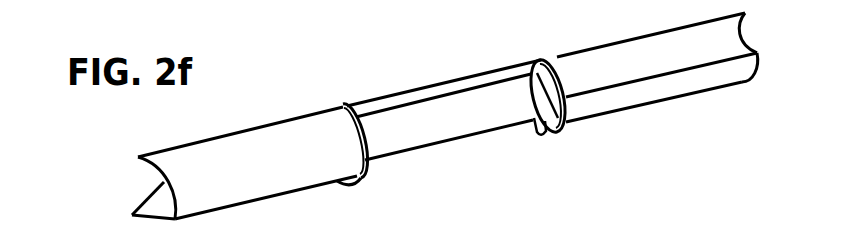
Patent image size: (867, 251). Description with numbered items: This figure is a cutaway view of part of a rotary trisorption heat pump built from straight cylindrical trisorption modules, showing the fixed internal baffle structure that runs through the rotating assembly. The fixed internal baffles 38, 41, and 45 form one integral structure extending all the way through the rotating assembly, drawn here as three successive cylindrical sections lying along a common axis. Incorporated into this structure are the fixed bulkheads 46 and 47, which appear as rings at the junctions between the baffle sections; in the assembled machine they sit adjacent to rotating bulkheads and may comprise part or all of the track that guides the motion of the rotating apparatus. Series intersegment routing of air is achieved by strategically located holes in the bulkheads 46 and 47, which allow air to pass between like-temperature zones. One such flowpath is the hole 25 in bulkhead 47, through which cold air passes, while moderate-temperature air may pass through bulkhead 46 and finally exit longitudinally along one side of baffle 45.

The fixed internal baffle 38 is at (265, 198).
The fixed internal baffle 41 is at (425, 146).
The fixed internal baffle 45 is at (687, 95).
The fixed bulkhead 46 is at (357, 185).
The fixed bulkhead 47 is at (558, 133).
The hole 25 is at (538, 136).